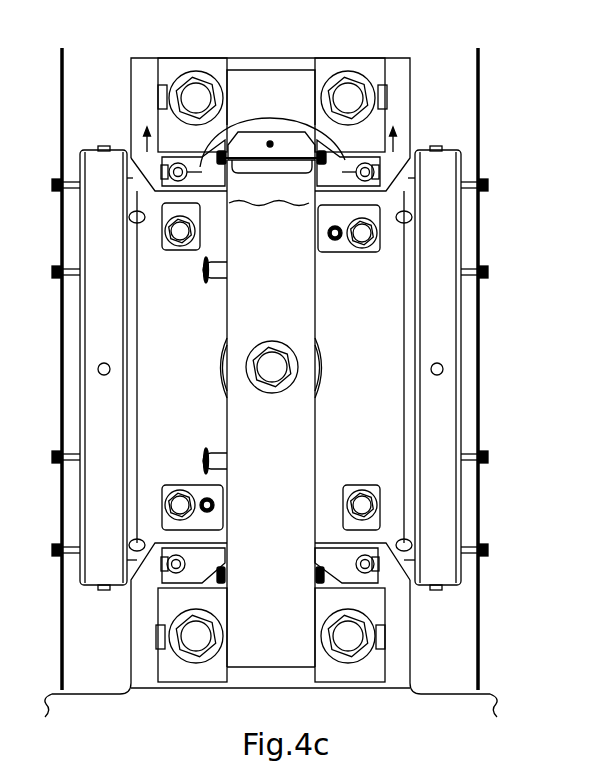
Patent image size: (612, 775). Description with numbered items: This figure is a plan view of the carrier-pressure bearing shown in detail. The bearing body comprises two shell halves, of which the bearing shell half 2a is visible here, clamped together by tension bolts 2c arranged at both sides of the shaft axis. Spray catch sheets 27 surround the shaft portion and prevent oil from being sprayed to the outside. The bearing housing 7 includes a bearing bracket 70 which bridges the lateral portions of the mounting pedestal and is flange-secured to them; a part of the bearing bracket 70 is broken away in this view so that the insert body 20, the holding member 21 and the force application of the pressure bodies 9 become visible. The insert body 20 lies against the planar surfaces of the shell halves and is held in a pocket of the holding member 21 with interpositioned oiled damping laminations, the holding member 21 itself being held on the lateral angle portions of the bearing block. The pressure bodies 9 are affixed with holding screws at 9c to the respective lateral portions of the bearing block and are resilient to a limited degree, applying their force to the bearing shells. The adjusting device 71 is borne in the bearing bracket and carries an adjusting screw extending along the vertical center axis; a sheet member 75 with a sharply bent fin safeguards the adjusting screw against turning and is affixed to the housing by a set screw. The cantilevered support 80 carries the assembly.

The spray catch sheets 27 is at (62, 103).
The cantilevered support 80 is at (212, 58).
The holding member 21 is at (260, 134).
The bearing bracket 70 is at (283, 78).
The pressure bodies 9 is at (183, 163).
The holding screws 9c is at (175, 174).
The tension bolts 2c is at (180, 244).
The insert body 20 is at (267, 170).
The adjusting device 71 is at (271, 362).
The sheet member 75 is at (298, 364).
The bearing housing 7 is at (305, 399).
The bearing shell half 2a is at (390, 420).